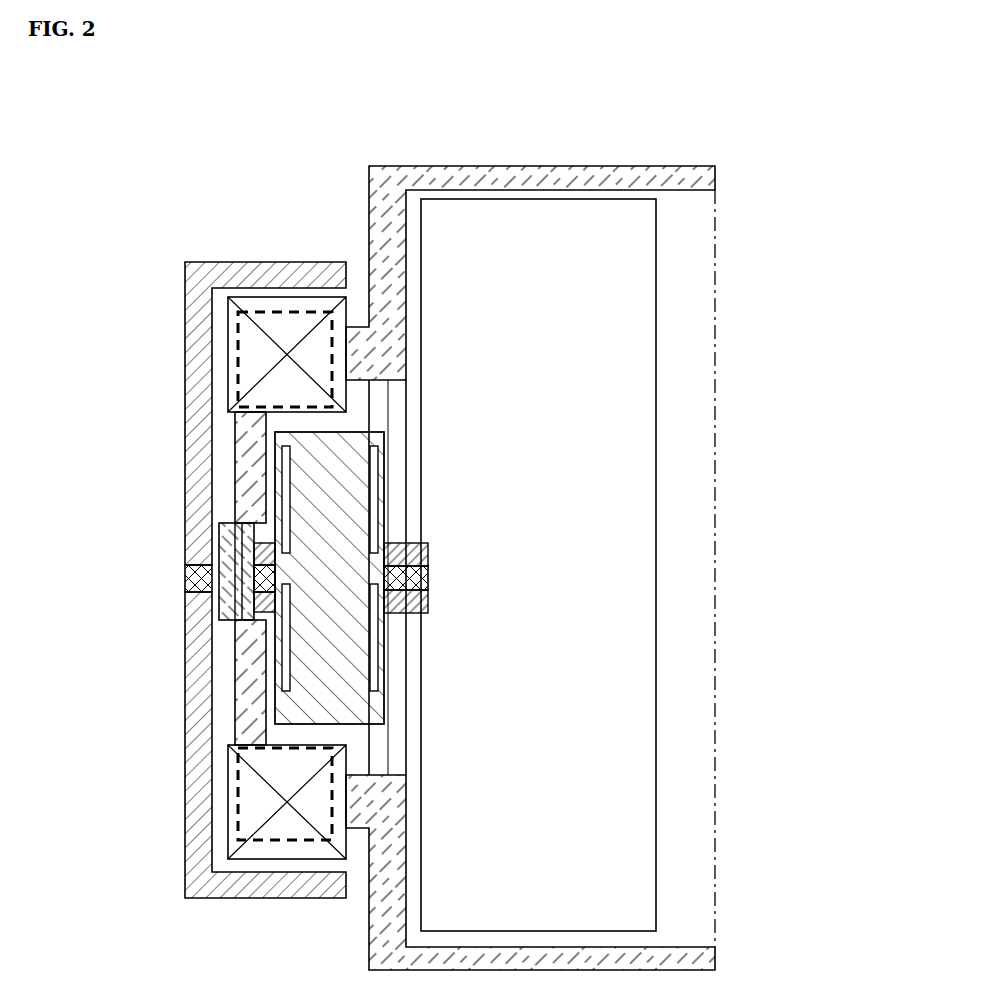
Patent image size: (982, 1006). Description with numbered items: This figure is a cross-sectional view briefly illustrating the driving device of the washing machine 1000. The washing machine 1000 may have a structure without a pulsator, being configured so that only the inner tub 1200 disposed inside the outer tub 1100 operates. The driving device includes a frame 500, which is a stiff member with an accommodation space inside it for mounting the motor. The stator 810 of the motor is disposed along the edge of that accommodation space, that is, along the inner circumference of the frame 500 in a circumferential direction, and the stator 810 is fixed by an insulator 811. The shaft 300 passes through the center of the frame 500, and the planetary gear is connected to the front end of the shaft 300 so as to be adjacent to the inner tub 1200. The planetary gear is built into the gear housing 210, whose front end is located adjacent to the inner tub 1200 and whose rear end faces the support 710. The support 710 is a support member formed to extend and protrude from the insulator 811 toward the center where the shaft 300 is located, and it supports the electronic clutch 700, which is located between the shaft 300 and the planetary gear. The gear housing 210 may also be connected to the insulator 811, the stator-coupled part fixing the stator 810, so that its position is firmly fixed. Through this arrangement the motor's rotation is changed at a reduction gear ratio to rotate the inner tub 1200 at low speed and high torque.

The washing machine 1000 is at (170, 107).
The outer tub 1100 is at (543, 178).
The inner tub 1200 is at (615, 830).
The frame 500 is at (196, 390).
The stator 810 is at (285, 300).
The insulator 811 is at (256, 308).
The support 710 is at (250, 465).
The electronic clutch 700 is at (245, 610).
The shaft 300 is at (185, 580).
The gear housing 210 is at (370, 710).